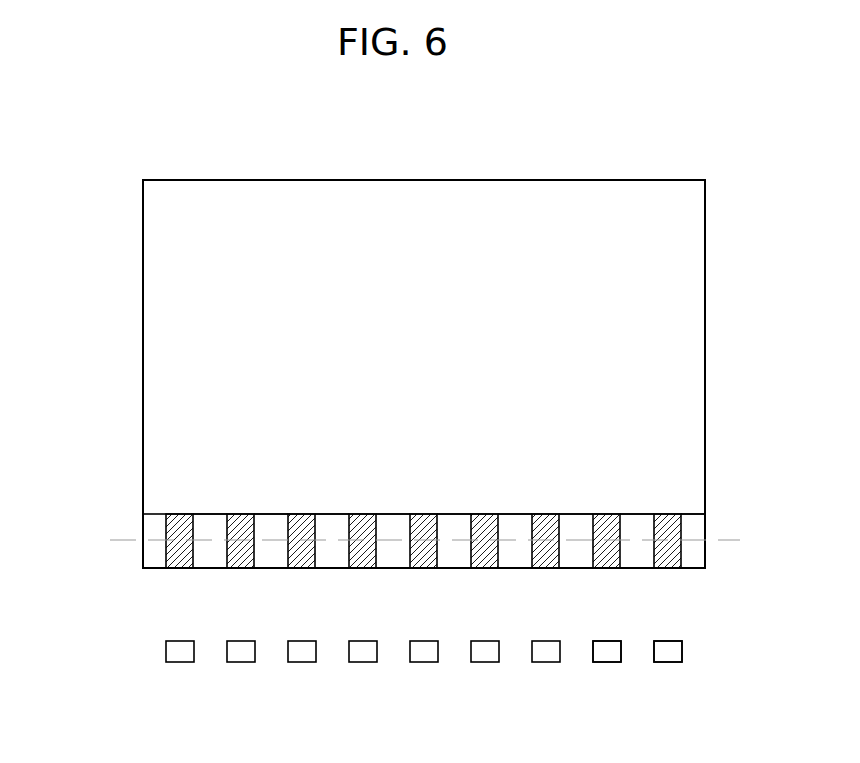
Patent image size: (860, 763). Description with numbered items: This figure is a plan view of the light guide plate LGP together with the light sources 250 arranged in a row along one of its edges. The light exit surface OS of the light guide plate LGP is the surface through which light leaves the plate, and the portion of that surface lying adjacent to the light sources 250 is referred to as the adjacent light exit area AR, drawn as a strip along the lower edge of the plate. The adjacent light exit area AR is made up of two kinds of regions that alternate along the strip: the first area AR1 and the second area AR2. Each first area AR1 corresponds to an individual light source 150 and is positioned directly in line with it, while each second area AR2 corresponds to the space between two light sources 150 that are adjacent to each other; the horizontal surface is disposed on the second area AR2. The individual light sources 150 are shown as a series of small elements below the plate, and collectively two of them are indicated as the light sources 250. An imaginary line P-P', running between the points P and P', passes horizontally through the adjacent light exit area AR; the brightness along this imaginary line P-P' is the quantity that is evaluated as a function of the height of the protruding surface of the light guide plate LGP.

The light guide plate LGP is at (705, 373).
The light exit surface OS is at (153, 373).
The adjacent light exit area AR is at (70, 453).
The first area AR1 is at (182, 520).
The second area AR2 is at (212, 520).
The imaginary line P-P' endpoint P is at (100, 569).
The imaginary line P-P' endpoint P' is at (746, 569).
The light source 150 is at (609, 662).
The light sources 250 is at (685, 718).